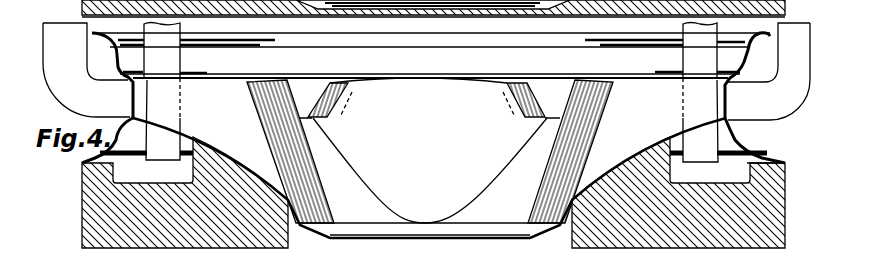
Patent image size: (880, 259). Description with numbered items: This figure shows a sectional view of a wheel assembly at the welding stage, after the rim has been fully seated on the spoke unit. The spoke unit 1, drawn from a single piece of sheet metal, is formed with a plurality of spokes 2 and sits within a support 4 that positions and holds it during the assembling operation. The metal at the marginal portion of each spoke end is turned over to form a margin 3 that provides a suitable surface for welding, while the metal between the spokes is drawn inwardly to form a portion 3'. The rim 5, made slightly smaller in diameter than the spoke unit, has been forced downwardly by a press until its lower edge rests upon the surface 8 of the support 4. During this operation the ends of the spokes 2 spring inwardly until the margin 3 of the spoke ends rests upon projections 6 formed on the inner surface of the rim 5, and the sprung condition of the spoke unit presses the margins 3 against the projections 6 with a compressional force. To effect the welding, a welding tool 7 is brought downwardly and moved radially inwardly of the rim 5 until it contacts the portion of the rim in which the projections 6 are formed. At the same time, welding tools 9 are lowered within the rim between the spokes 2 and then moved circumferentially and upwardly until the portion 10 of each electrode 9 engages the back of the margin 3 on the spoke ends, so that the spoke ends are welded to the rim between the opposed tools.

The spoke unit 1 is at (200, 118).
The spokes 2 is at (190, 97).
The turned over marginal portion of spoke end 3 is at (442, 121).
The curved diaphragm 3' is at (430, 170).
The support 4 is at (763, 212).
The rim 5 is at (763, 60).
The projections 6 is at (132, 100).
The welding tool 7 is at (55, 37).
The surface of the support 8 is at (777, 165).
The welding tools (electrodes) 9 is at (172, 38).
The portion of the electrode 10 is at (197, 133).